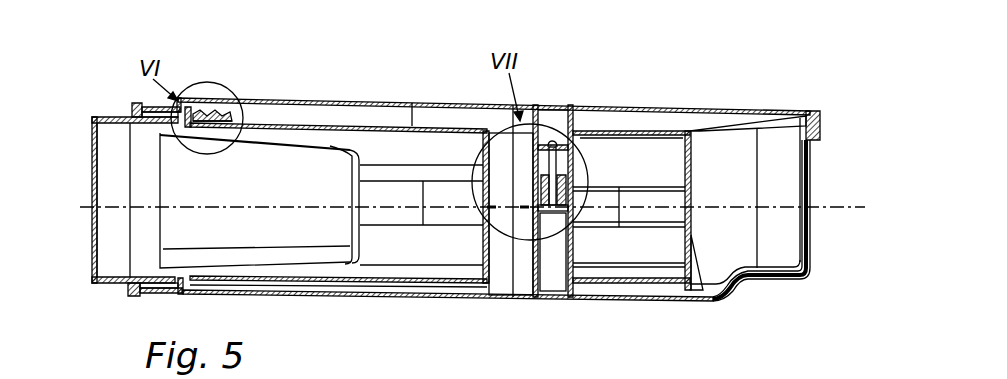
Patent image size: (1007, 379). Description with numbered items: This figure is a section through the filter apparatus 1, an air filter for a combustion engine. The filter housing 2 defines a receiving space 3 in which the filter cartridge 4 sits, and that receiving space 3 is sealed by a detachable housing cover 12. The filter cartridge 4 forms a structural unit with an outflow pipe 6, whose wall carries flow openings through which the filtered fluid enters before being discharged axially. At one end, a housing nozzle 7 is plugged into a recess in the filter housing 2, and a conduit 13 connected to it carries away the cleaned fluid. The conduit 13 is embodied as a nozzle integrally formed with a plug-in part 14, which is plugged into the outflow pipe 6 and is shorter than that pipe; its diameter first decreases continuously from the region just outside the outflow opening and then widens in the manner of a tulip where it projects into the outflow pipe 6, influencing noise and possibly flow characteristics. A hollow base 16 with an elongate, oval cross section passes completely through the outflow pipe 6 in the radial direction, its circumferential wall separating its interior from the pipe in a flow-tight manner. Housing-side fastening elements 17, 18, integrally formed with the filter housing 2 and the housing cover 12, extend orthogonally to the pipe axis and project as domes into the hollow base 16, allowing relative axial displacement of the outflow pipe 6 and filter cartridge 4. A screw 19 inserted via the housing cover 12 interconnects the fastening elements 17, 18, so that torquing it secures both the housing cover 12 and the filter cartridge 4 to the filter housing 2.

The filter apparatus 1 is at (660, 45).
The filter housing 2 is at (810, 251).
The receiving space 3 is at (733, 124).
The filter cartridge 4 is at (606, 126).
The outflow pipe 6 is at (436, 128).
The housing nozzle 7 is at (152, 296).
The housing cover 12 is at (355, 99).
The conduit 13 is at (92, 283).
The plug-in part 14 is at (258, 145).
The hollow base 16 is at (505, 272).
The fastening element 17 is at (565, 268).
The fastening element 18 is at (560, 110).
The screw 19 is at (555, 167).